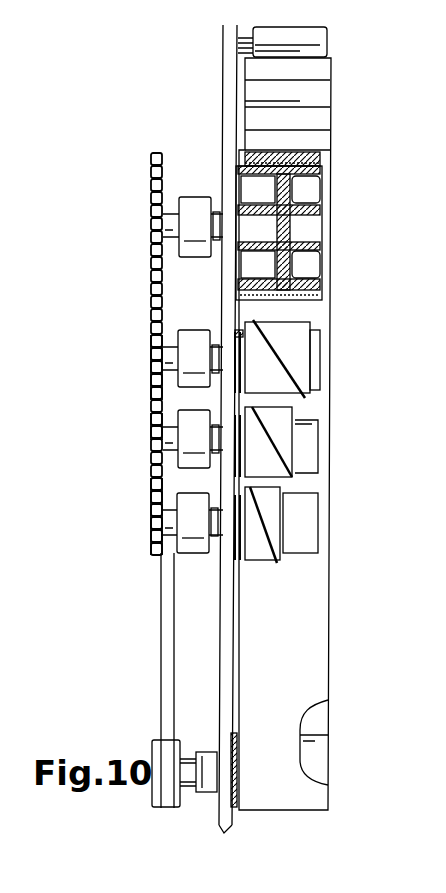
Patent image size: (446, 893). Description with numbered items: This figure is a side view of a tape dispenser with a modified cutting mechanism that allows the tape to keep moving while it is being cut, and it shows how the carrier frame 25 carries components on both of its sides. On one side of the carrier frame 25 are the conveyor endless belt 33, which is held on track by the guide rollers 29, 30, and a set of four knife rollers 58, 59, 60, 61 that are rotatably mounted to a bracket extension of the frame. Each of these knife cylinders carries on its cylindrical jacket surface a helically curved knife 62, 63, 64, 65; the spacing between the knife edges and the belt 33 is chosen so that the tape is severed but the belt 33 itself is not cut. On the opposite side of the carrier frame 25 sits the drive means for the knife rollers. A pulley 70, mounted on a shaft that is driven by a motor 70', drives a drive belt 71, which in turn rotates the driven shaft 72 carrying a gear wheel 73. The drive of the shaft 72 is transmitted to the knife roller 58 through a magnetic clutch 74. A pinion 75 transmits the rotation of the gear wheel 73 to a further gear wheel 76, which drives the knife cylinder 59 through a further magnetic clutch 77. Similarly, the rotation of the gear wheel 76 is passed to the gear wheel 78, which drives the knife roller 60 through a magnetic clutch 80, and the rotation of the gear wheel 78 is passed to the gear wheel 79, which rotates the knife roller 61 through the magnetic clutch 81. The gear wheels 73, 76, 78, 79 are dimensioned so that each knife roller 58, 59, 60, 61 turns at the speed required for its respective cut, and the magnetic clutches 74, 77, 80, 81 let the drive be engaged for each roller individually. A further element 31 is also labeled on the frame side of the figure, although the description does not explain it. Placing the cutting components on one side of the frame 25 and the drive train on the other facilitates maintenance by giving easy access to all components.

The carrier frame 25 is at (233, 828).
The guide roller 29 is at (305, 41).
The guide roller 30 is at (322, 95).
The bearing 31 is at (310, 756).
The conveyor endless belt 33 is at (273, 797).
The knife roller 58 is at (311, 541).
The knife roller 59 is at (307, 442).
The knife roller 60 is at (309, 359).
The knife roller 61 is at (320, 166).
The helically curved knife 62 is at (262, 540).
The helically curved knife 63 is at (264, 428).
The helically curved knife 64 is at (267, 345).
The helically curved knife 65 is at (300, 152).
The pulley 70 is at (141, 750).
The motor 70' is at (197, 807).
The drive belt 71 is at (160, 600).
The driven shaft 72 is at (148, 530).
The gear wheel 73 is at (148, 502).
The magnetic clutch 74 is at (193, 523).
The pinion 75 is at (148, 483).
The gear wheel 76 is at (148, 425).
The magnetic clutch 77 is at (193, 439).
The gear wheel 78 is at (148, 342).
The gear wheel 79 is at (148, 172).
The magnetic clutch 80 is at (193, 358).
The magnetic clutch 81 is at (193, 227).